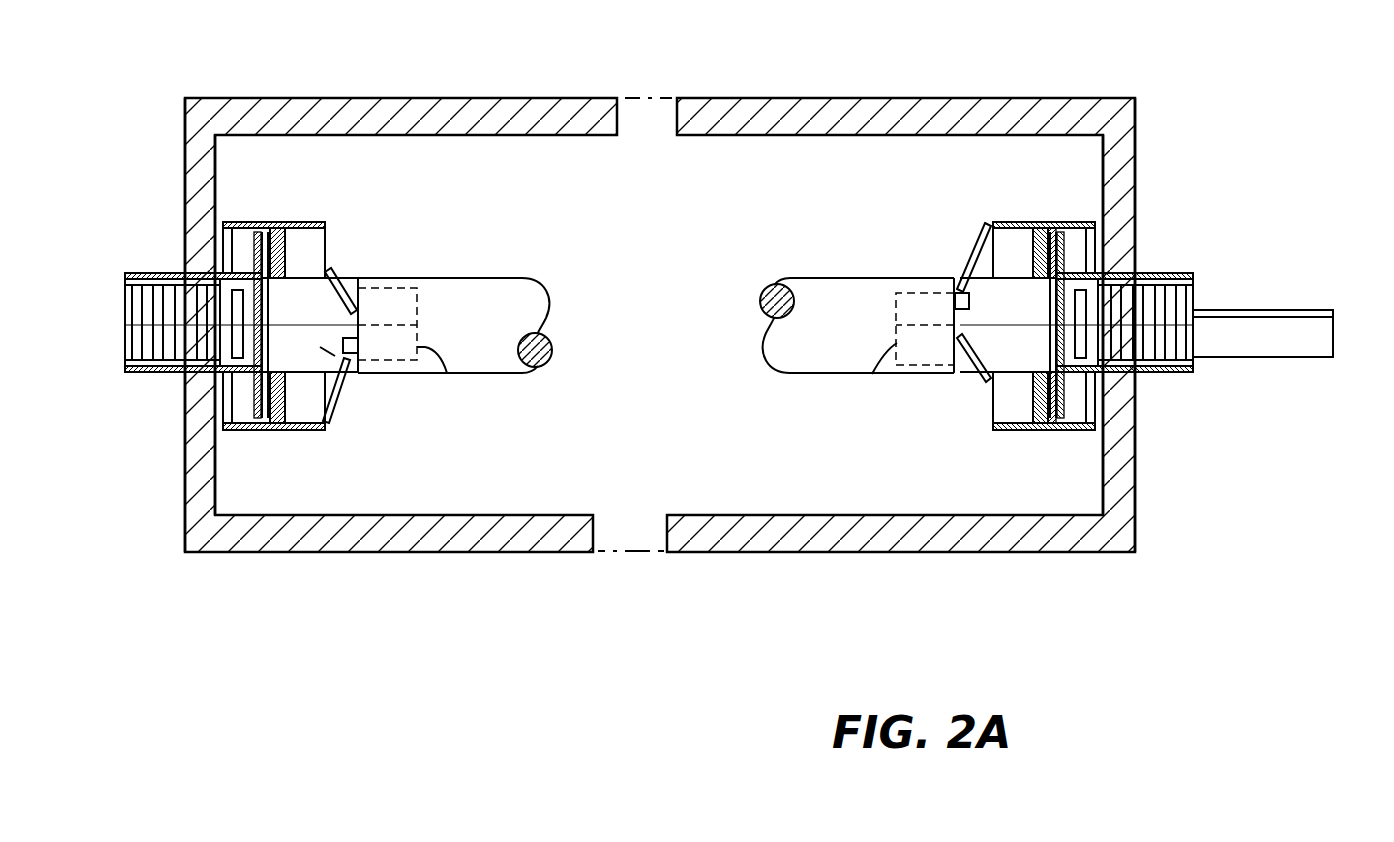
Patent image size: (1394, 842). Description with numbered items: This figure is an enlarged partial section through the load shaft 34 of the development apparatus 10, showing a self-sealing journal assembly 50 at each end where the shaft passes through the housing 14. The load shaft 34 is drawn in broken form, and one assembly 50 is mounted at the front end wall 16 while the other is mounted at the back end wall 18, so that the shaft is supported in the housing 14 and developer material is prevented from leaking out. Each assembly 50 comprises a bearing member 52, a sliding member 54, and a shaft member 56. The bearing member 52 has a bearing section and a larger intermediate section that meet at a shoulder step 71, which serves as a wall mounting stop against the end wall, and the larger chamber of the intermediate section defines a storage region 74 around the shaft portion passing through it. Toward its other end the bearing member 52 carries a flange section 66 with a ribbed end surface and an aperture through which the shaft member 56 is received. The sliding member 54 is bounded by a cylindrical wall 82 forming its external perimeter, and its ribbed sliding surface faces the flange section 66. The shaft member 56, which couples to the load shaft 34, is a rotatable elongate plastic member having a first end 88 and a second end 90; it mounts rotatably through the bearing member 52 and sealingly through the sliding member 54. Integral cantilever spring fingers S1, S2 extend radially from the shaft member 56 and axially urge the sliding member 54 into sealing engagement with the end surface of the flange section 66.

The development apparatus 10 is at (540, 95).
The housing 14 is at (890, 96).
The front end wall 16 is at (185, 190).
The back end wall 18 is at (1135, 203).
The load shaft 34 is at (480, 331).
The self-sealing journal assembly 50 is at (335, 240).
The bearing member 52 is at (148, 373).
The sliding member 54 is at (258, 222).
The shaft member 56 is at (345, 354).
The flange section 66 is at (256, 406).
The shoulder step 71 is at (222, 275).
The storage region 74 is at (1118, 290).
The cylindrical wall 82 is at (248, 433).
The first end 88 is at (124, 329).
The second end 90 is at (657, 374).
The cantilever spring finger S1 is at (337, 278).
The cantilever spring finger S2 is at (335, 413).